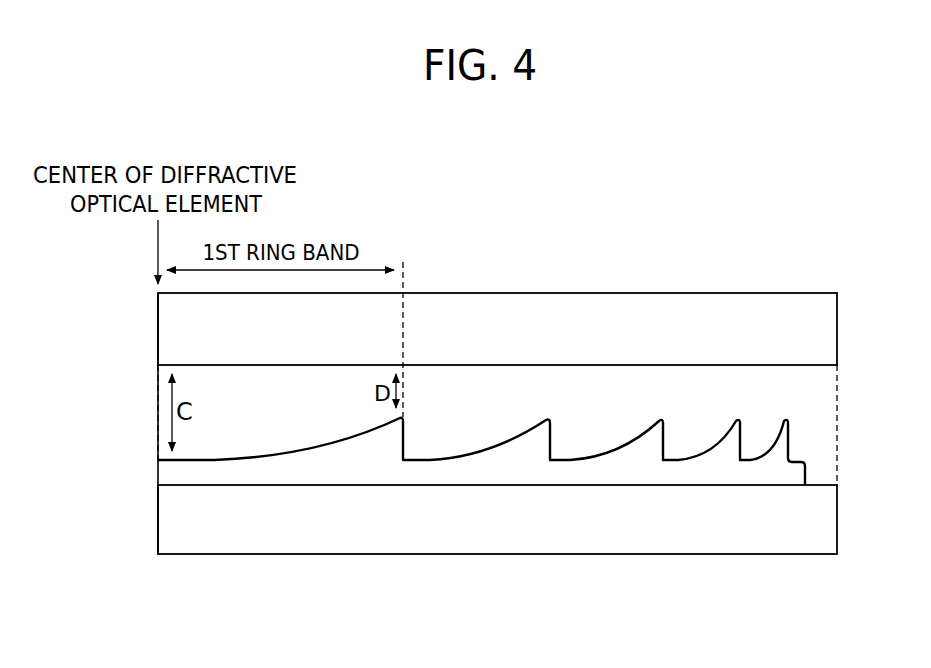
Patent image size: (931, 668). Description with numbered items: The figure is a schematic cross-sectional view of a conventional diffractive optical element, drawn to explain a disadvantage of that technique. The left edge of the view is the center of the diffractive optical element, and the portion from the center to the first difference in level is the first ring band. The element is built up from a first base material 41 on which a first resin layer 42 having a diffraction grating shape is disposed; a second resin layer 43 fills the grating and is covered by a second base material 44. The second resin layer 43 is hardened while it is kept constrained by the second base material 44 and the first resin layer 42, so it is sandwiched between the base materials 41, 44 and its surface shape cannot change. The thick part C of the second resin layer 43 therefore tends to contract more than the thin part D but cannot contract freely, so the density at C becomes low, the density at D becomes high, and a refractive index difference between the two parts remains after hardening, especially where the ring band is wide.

The first base material 41 is at (653, 544).
The first resin layer 42 is at (570, 473).
The second resin layer 43 is at (458, 392).
The second base material 44 is at (640, 305).